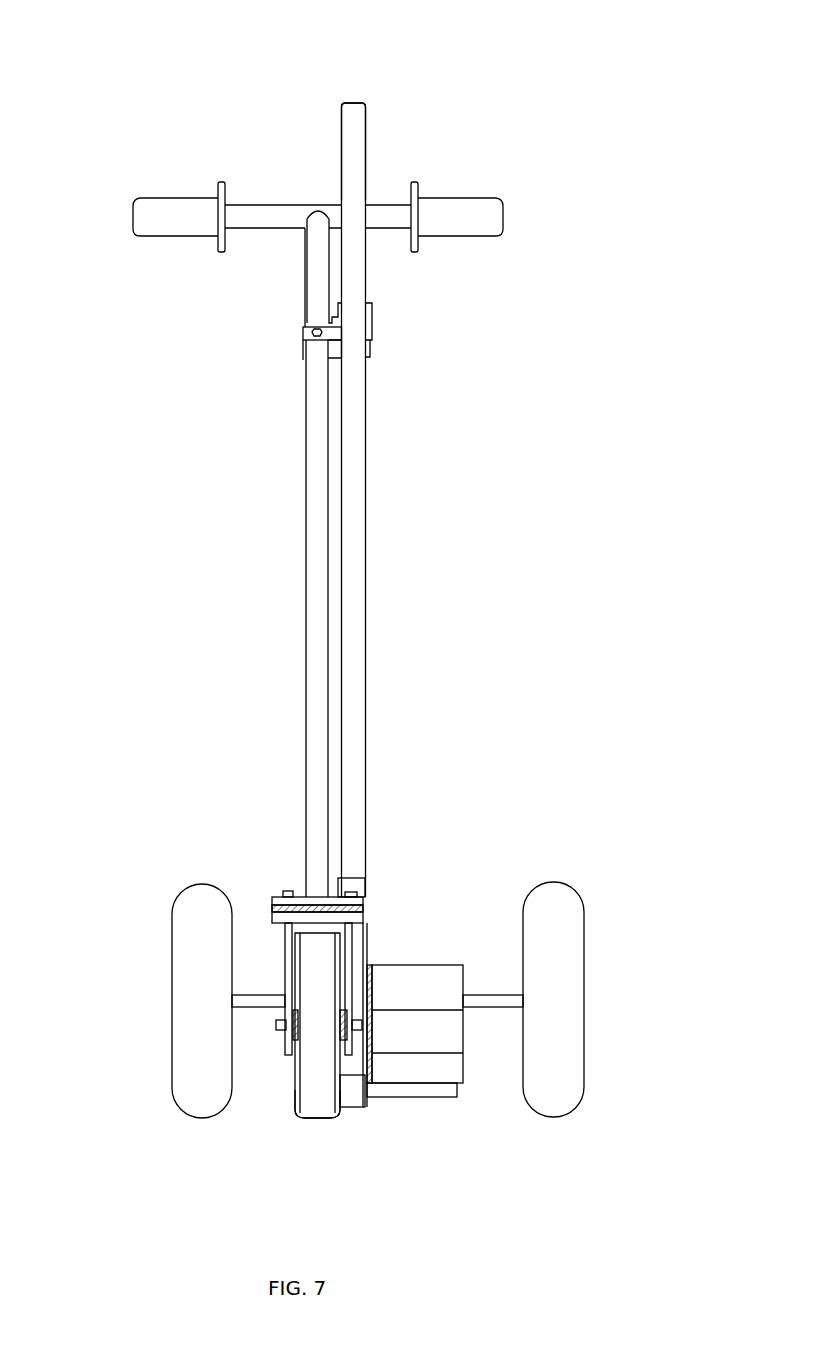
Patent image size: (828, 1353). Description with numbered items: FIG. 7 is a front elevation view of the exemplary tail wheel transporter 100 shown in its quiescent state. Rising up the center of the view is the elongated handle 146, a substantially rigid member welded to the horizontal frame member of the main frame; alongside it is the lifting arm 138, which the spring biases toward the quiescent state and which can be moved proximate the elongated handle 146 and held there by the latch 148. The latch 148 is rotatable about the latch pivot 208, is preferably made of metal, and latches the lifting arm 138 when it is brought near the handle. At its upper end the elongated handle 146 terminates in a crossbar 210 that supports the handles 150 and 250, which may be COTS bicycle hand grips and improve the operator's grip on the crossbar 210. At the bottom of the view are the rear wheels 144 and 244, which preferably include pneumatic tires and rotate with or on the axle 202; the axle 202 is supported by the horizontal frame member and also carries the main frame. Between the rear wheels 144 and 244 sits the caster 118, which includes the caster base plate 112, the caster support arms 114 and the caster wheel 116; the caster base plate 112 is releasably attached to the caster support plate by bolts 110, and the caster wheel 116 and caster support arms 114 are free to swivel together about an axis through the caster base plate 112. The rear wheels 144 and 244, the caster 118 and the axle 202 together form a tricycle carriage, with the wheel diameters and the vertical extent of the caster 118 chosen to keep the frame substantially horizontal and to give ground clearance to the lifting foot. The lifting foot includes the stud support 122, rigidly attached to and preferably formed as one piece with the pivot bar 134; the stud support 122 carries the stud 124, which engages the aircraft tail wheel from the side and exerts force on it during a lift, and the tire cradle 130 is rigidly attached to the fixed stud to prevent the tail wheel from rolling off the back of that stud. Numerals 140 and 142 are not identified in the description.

The tail wheel transporter 100 is at (297, 63).
The bolts 110 is at (287, 885).
The caster base plate 112 is at (282, 1013).
The caster support arms 114 is at (275, 917).
The caster wheel 116 is at (300, 1093).
The caster 118 is at (312, 1147).
The stud support 122 is at (353, 1082).
The stud 124 is at (397, 1083).
The tire cradle 130 is at (407, 970).
The pivot bar 134 is at (357, 888).
The lifting arm 138 is at (443, 442).
The steering column 140 is at (353, 503).
The upper column portion 142 is at (355, 128).
The rear wheel 144 is at (563, 1092).
The elongated handle 146 is at (318, 459).
The latch 148 is at (368, 317).
The handle 150 is at (462, 198).
The axle 202 is at (255, 995).
The latch pivot 208 is at (318, 328).
The crossbar 210 is at (282, 210).
The rear wheel 244 is at (187, 1055).
The handle 250 is at (165, 203).